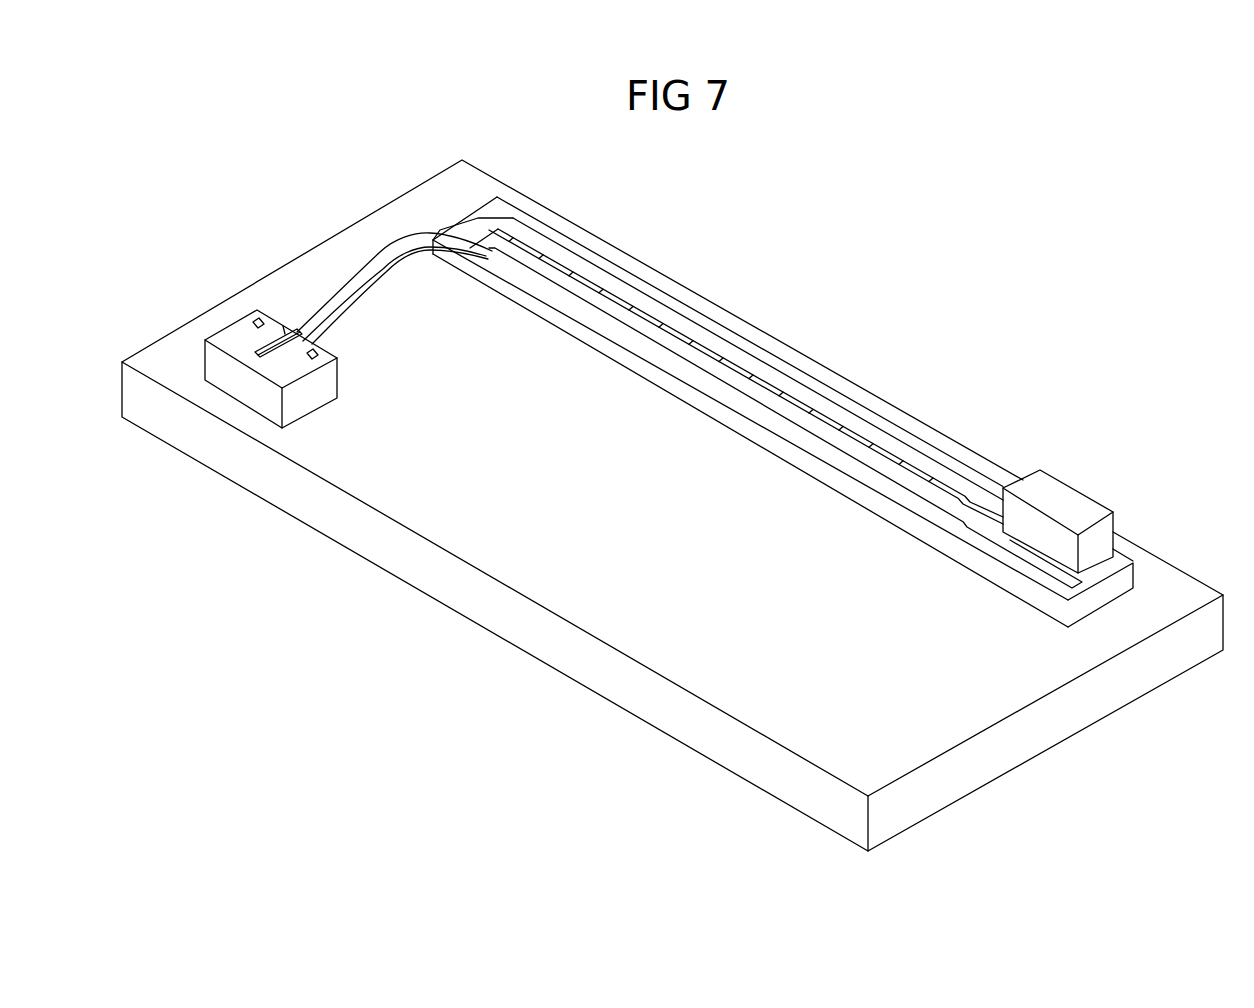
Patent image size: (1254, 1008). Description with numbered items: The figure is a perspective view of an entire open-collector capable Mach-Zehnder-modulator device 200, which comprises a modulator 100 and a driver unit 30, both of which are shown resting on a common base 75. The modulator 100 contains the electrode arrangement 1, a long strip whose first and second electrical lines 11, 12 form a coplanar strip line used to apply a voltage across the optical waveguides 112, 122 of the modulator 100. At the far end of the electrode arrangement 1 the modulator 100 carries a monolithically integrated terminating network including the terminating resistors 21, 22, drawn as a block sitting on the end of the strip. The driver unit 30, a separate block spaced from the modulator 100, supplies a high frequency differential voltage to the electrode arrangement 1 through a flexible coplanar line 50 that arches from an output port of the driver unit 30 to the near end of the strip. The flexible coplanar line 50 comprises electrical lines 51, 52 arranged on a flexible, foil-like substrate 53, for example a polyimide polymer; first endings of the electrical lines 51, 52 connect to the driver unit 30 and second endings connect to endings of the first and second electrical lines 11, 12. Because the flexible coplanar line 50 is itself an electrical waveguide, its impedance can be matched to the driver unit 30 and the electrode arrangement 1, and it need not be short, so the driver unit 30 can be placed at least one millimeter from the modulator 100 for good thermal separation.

The base plate 75 is at (1033, 743).
The driver unit 30 is at (258, 392).
The flexible coplanar line 50 is at (353, 248).
The electrical line 51 is at (372, 259).
The electrical line 52 is at (384, 261).
The flexible foil-like substrate 53 is at (330, 288).
The Mach-Zehnder-modulator device 200 is at (783, 398).
The electrode arrangement 1 is at (783, 412).
The first electrical line 11 is at (882, 442).
The optical waveguide 112 is at (908, 480).
The second electrical line 12 is at (870, 462).
The optical waveguide 122 is at (908, 480).
The modulator 100 is at (1047, 449).
The terminating resistor 21 is at (1010, 487).
The terminating resistor 22 is at (1000, 508).